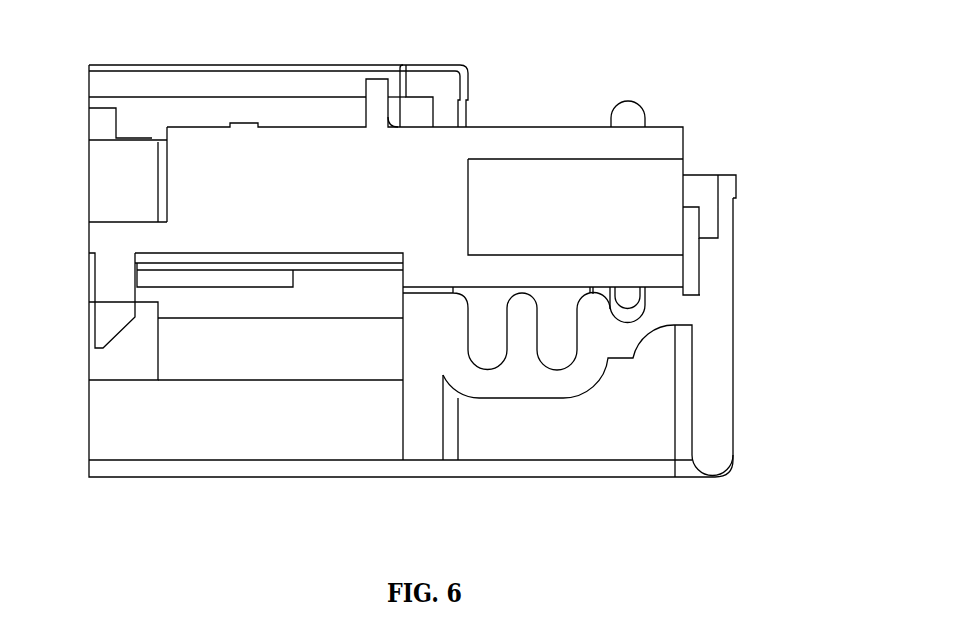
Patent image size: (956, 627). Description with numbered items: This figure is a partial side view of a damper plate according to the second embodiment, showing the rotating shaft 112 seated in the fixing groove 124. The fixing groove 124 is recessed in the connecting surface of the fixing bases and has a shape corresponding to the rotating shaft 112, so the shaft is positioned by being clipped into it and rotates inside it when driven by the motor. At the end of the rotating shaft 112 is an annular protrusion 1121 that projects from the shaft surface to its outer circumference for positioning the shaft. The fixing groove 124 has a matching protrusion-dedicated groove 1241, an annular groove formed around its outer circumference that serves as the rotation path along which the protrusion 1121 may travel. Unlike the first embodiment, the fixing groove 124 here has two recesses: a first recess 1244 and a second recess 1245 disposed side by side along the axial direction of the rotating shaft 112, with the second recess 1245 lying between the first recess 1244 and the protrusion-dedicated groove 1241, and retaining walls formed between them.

The rotating shaft 112 is at (292, 155).
The protrusion 1121 is at (633, 117).
The fixing groove 124 is at (695, 247).
The protrusion-dedicated groove 1241 is at (627, 313).
The first recess 1244 is at (487, 325).
The second recess 1245 is at (557, 345).